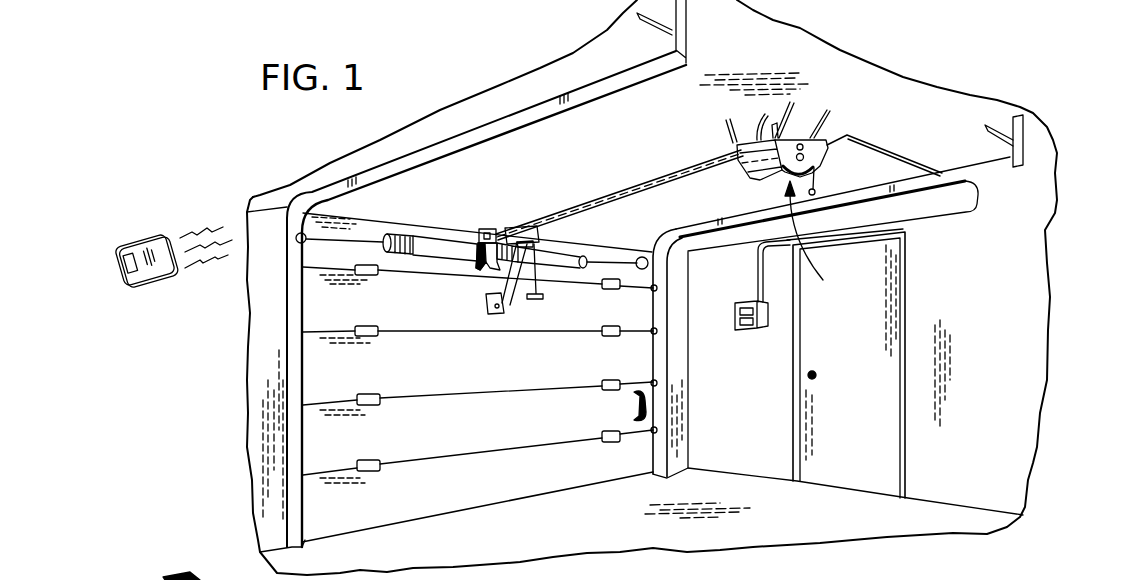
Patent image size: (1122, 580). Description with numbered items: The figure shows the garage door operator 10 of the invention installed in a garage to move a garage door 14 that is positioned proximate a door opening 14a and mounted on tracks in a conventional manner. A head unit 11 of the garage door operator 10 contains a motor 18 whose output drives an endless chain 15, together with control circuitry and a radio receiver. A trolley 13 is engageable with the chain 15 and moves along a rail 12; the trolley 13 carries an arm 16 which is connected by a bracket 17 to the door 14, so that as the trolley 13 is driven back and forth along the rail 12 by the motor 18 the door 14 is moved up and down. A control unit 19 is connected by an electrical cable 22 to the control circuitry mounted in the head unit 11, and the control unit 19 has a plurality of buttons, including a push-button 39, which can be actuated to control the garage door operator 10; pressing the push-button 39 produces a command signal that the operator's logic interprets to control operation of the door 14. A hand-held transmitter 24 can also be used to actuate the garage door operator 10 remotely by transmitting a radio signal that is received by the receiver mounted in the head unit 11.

The garage door operator 10 is at (818, 240).
The head unit 11 is at (760, 153).
The rail 12 is at (590, 200).
The trolley 13 is at (533, 228).
The garage door 14 is at (537, 378).
The door opening 14a is at (308, 458).
The endless chain 15 is at (660, 215).
The arm 16 is at (500, 303).
The bracket 17 is at (487, 300).
The motor 18 is at (759, 179).
The control unit 19 is at (733, 320).
The electrical cable 22 is at (502, 222).
The transmitter 24 is at (143, 236).
The push-button 39 is at (740, 327).